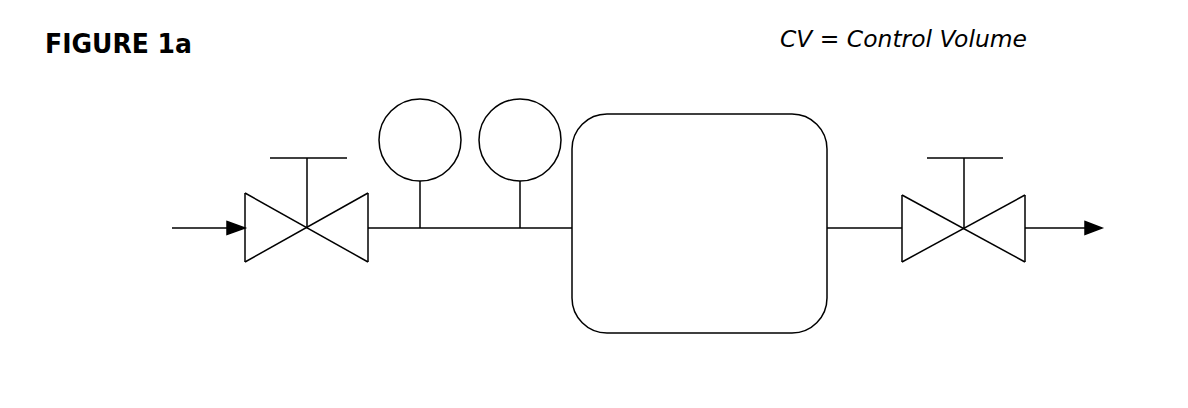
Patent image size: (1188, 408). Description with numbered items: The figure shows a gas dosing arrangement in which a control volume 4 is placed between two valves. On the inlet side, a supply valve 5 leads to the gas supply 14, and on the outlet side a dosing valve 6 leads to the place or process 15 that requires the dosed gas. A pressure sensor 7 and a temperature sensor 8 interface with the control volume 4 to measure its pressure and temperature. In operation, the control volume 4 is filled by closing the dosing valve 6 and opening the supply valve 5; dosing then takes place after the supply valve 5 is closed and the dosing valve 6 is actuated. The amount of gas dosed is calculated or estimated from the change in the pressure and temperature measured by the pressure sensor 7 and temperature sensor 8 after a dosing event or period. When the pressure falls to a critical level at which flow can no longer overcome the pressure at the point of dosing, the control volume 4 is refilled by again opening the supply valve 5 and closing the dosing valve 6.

The control volume 4 is at (699, 223).
The supply valve 5 is at (306, 237).
The dosing valve 6 is at (960, 244).
The pressure sensor 7 is at (420, 144).
The temperature sensor 8 is at (520, 144).
The gas supply 14 is at (183, 228).
The place/process 15 is at (1091, 230).